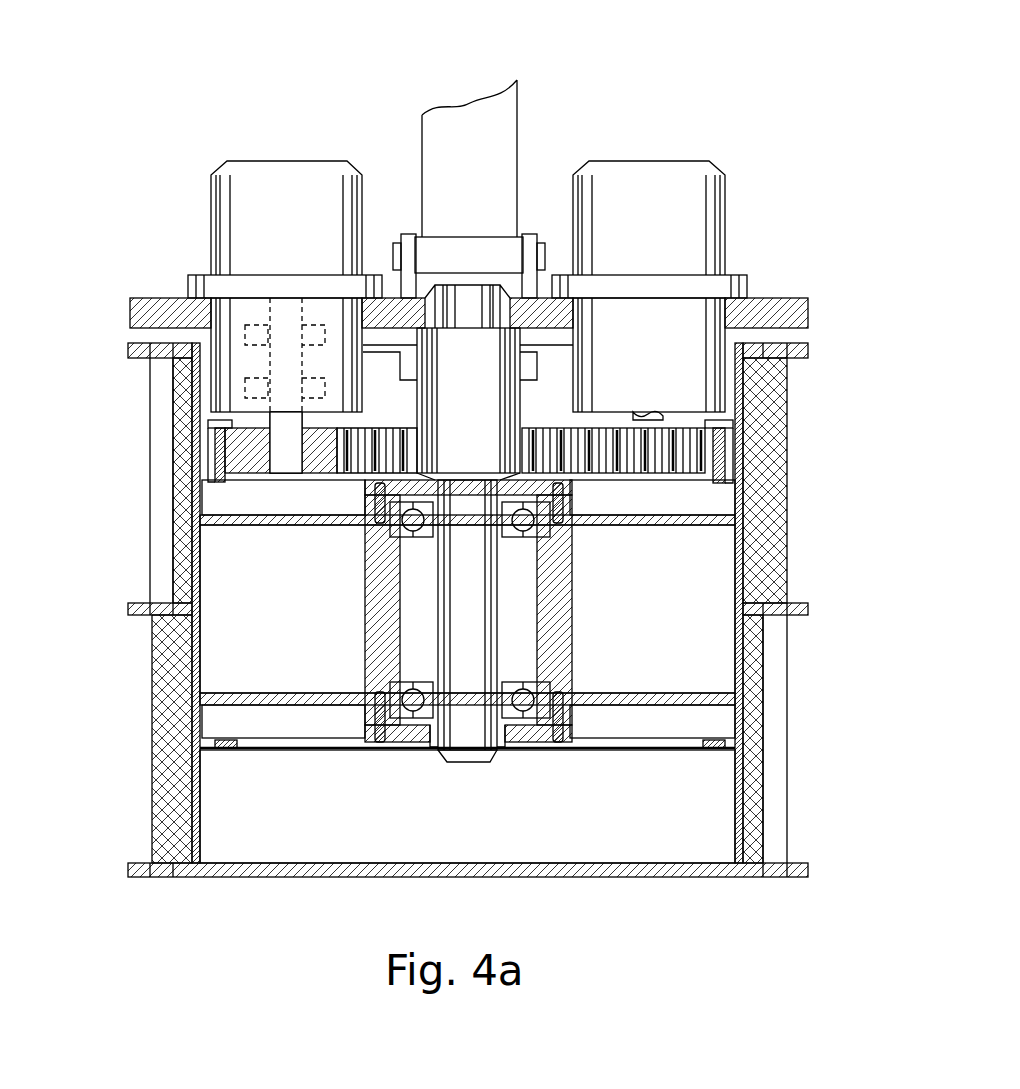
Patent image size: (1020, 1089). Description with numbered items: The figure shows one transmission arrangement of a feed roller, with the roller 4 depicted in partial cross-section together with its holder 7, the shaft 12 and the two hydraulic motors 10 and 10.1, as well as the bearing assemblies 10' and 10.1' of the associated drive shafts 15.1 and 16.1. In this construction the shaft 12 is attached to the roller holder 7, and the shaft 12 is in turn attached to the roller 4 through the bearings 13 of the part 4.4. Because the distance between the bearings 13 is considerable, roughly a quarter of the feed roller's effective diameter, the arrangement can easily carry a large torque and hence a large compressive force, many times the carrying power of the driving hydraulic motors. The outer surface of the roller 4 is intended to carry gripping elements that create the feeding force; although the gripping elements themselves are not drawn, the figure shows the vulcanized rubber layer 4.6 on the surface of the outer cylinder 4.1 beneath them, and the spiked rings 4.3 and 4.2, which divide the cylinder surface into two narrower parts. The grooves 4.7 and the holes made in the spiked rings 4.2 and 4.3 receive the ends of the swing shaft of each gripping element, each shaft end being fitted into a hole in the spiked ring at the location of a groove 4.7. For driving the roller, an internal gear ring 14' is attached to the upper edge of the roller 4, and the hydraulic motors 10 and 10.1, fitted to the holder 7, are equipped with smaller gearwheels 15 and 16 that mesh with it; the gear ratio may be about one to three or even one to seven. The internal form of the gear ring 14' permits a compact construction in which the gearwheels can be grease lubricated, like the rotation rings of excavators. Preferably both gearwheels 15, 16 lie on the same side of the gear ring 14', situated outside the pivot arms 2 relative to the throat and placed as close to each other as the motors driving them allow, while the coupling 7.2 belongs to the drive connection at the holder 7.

The pivot arm 2 is at (480, 157).
The roller 4 is at (68, 405).
The outer cylinder 4.1 is at (192, 588).
The spiked ring 4.2 is at (790, 620).
The spiked ring 4.3 is at (808, 352).
The bearing part 4.4 is at (368, 615).
The vulcanized rubber layer 4.6 is at (165, 782).
The groove 4.7 is at (173, 507).
The roller holder 7 is at (808, 308).
The coupling 7.2 is at (500, 258).
The hydraulic motor 10 is at (649, 229).
The bearing assembly 10' is at (649, 355).
The hydraulic motor 10.1 is at (279, 184).
The bearing assembly 10.1' is at (229, 324).
The shaft 12 is at (485, 389).
The bearing 13 is at (536, 528).
The internal gear ring 14' is at (613, 430).
The gearwheel 15 is at (722, 412).
The drive shaft 15.1 is at (668, 418).
The gearwheel 16 is at (350, 447).
The drive shaft 16.1 is at (285, 445).